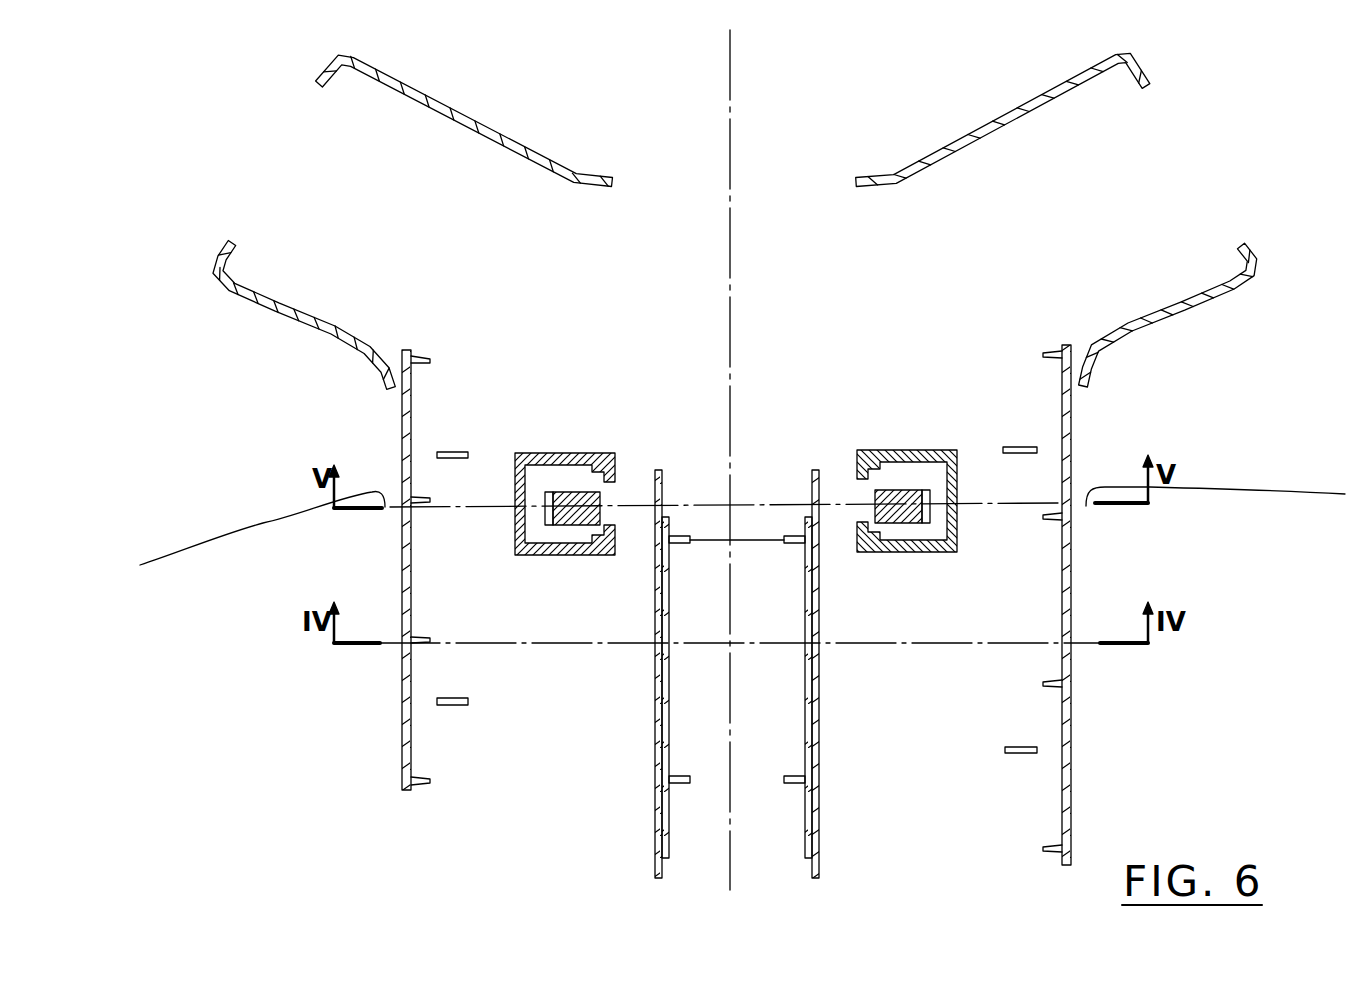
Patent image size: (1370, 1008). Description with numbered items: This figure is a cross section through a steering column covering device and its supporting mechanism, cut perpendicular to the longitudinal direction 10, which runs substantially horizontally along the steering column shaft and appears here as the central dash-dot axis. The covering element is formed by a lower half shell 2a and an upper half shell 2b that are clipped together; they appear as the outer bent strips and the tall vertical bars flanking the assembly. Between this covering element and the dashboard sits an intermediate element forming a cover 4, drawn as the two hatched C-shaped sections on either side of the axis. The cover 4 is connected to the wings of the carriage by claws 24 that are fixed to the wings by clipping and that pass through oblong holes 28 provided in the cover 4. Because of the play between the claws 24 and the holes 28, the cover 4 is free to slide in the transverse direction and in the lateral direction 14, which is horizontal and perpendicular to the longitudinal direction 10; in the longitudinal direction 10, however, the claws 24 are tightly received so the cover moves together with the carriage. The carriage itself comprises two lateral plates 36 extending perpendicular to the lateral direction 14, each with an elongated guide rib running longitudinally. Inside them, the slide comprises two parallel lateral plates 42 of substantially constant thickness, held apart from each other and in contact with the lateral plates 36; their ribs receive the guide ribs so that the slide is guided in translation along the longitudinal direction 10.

The longitudinal direction 10 is at (730, 82).
The lower half shell 2a is at (1072, 698).
The upper half shell 2b is at (1172, 312).
The cover 4 is at (578, 470).
The lateral direction 14 is at (1084, 506).
The claws 24 is at (603, 510).
The oblong holes 28 is at (549, 500).
The lateral plates 36 is at (656, 790).
The lateral plates 42 is at (670, 815).